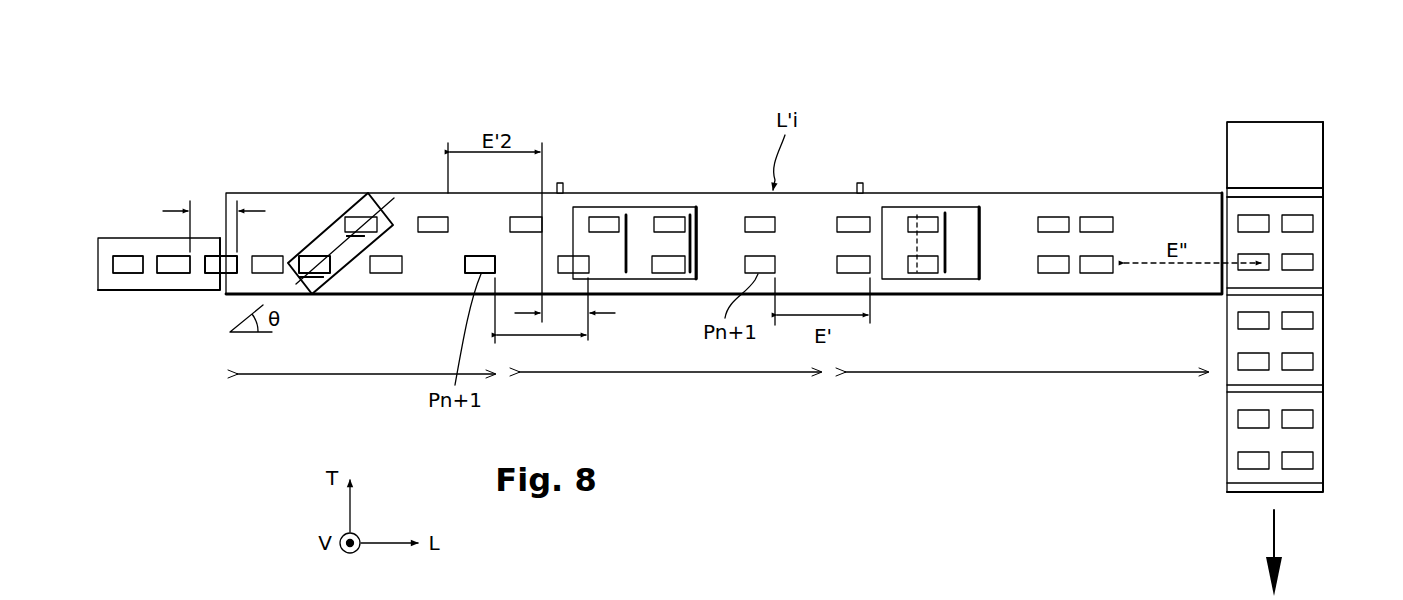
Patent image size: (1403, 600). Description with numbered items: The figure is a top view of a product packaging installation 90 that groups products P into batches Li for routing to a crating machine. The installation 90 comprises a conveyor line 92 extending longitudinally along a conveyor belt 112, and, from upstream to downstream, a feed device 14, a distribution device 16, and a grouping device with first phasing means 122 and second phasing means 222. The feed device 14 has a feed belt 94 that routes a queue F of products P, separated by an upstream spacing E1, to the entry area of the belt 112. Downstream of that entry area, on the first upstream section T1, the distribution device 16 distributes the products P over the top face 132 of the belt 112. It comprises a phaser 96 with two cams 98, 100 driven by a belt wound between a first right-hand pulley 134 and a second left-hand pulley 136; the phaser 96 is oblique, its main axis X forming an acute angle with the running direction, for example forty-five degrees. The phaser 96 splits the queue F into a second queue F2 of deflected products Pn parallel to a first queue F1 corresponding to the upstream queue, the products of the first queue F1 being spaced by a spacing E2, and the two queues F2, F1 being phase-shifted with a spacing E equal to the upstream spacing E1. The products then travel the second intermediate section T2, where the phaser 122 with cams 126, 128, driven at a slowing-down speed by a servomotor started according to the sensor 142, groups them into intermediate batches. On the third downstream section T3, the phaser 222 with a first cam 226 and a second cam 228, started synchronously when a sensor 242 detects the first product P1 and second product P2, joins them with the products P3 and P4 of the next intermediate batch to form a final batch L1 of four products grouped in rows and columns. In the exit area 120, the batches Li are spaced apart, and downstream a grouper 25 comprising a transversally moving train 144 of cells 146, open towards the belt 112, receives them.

The feed device 14 is at (119, 226).
The distribution device 16 is at (326, 149).
The grouper 25 is at (1210, 447).
The product packaging installation 90 is at (646, 66).
The conveyor line 92 is at (524, 116).
The feed belt 94 is at (101, 276).
The phaser 96 is at (333, 305).
The cam 98 is at (348, 253).
The cam 100 is at (295, 257).
The conveyor belt 112 is at (337, 206).
The exit area 120 is at (1136, 162).
The phaser 122 is at (608, 180).
The cam 126 is at (700, 215).
The cam 128 is at (630, 218).
The top face 132 is at (433, 252).
The first right-hand pulley 134 is at (335, 296).
The second left-hand pulley 136 is at (367, 195).
The sensor 142 is at (560, 182).
The train 144 is at (1335, 182).
The cells 146 is at (1282, 136).
The phaser 222 is at (930, 190).
The first cam 226 is at (947, 220).
The second cam 228 is at (912, 268).
The sensor 242 is at (856, 188).
The products P is at (216, 274).
The first product P1 is at (1300, 222).
The second product P2 is at (1308, 262).
The product P3 is at (1245, 223).
The product P4 is at (1253, 270).
The deflected products Pn is at (523, 216).
The final batch L1 is at (1243, 197).
The batches Li is at (1205, 330).
The queue F is at (146, 212).
The first queue F1 is at (456, 268).
The second queue F2 is at (432, 190).
The main axis X is at (230, 331).
The spacing E is at (555, 310).
The upstream spacing E1 is at (214, 217).
The spacing E2 is at (541, 351).
The first upstream section T1 is at (366, 360).
The second intermediate section T2 is at (670, 358).
The third downstream section T3 is at (1026, 358).